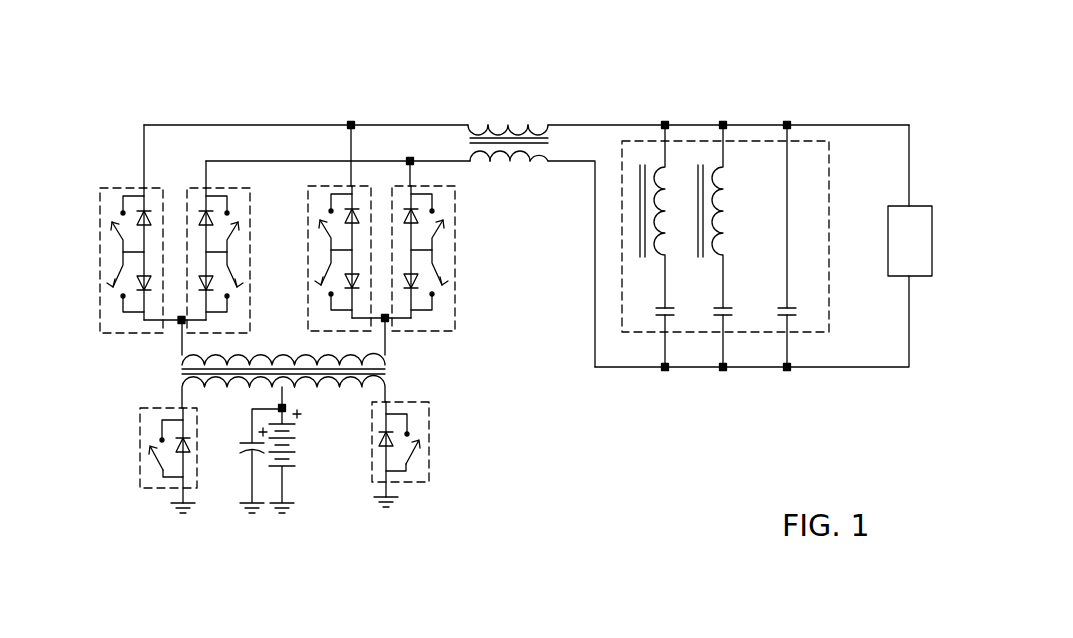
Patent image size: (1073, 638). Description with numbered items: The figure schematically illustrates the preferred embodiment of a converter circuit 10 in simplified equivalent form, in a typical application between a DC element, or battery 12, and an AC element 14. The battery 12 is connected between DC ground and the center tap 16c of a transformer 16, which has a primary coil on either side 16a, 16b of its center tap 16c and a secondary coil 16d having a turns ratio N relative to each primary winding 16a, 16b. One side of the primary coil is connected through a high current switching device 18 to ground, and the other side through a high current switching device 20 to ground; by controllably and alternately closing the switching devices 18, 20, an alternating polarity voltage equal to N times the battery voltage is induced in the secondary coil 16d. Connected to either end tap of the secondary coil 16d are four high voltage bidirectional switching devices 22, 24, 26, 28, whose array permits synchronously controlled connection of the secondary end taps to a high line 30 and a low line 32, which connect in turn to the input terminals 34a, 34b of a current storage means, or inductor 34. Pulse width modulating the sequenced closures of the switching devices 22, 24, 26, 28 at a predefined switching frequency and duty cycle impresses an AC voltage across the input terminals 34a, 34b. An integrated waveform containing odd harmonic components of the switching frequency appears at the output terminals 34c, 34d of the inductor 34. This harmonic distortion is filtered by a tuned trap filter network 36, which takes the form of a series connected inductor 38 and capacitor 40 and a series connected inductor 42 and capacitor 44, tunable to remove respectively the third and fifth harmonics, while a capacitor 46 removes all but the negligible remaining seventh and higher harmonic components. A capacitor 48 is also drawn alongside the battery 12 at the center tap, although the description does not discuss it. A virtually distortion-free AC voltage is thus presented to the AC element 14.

The converter circuit 10 is at (381, 64).
The battery 12 is at (290, 436).
The AC element 14 is at (921, 250).
The transformer 16 is at (309, 372).
The primary coil side 16a is at (216, 386).
The primary coil side 16b is at (340, 403).
The center tap 16c is at (287, 386).
The secondary coil 16d is at (300, 331).
The high current switching device 18 is at (140, 425).
The high current switching device 20 is at (430, 420).
The bidirectional switching device 22 is at (99, 210).
The bidirectional switching device 24 is at (246, 268).
The bidirectional switching device 26 is at (308, 238).
The bidirectional switching device 28 is at (455, 290).
The high line 30 is at (262, 124).
The low line 32 is at (262, 160).
The inductor 34 is at (510, 138).
The input terminal 34a is at (470, 123).
The input terminal 34b is at (506, 193).
The output terminal 34c is at (548, 123).
The output terminal 34d is at (543, 183).
The tuned trap filter network 36 is at (749, 246).
The inductor 38 is at (660, 195).
The capacitor 40 is at (685, 303).
The inductor 42 is at (718, 195).
The capacitor 44 is at (743, 303).
The capacitor 46 is at (806, 303).
The capacitor 48 is at (250, 443).